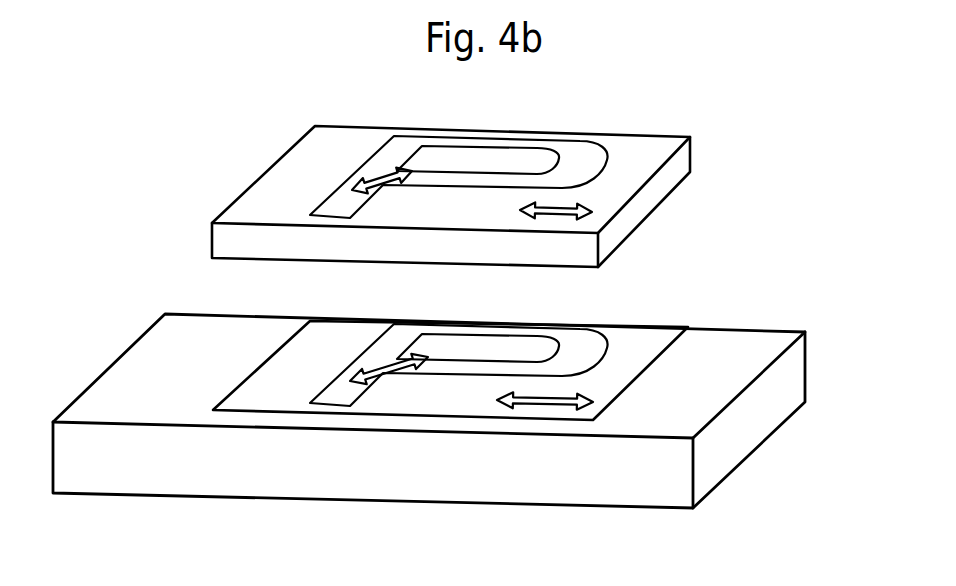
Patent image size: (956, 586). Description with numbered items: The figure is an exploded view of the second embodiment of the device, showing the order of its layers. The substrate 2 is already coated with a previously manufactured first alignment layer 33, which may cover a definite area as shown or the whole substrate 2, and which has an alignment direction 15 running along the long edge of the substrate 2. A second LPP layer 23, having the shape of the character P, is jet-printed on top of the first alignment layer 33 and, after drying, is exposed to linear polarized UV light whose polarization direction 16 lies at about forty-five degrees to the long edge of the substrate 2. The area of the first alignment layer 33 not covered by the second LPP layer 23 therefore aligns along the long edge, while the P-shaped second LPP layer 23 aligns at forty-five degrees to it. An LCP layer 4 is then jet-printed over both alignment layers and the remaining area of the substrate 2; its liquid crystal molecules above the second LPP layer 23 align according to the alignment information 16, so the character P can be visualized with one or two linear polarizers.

The substrate 2 is at (792, 390).
The LCP layer 4 is at (650, 152).
The alignment direction 15 is at (535, 405).
The polarization direction 16 is at (383, 370).
The second LPP layer 23 is at (580, 353).
The first alignment layer 33 is at (660, 343).